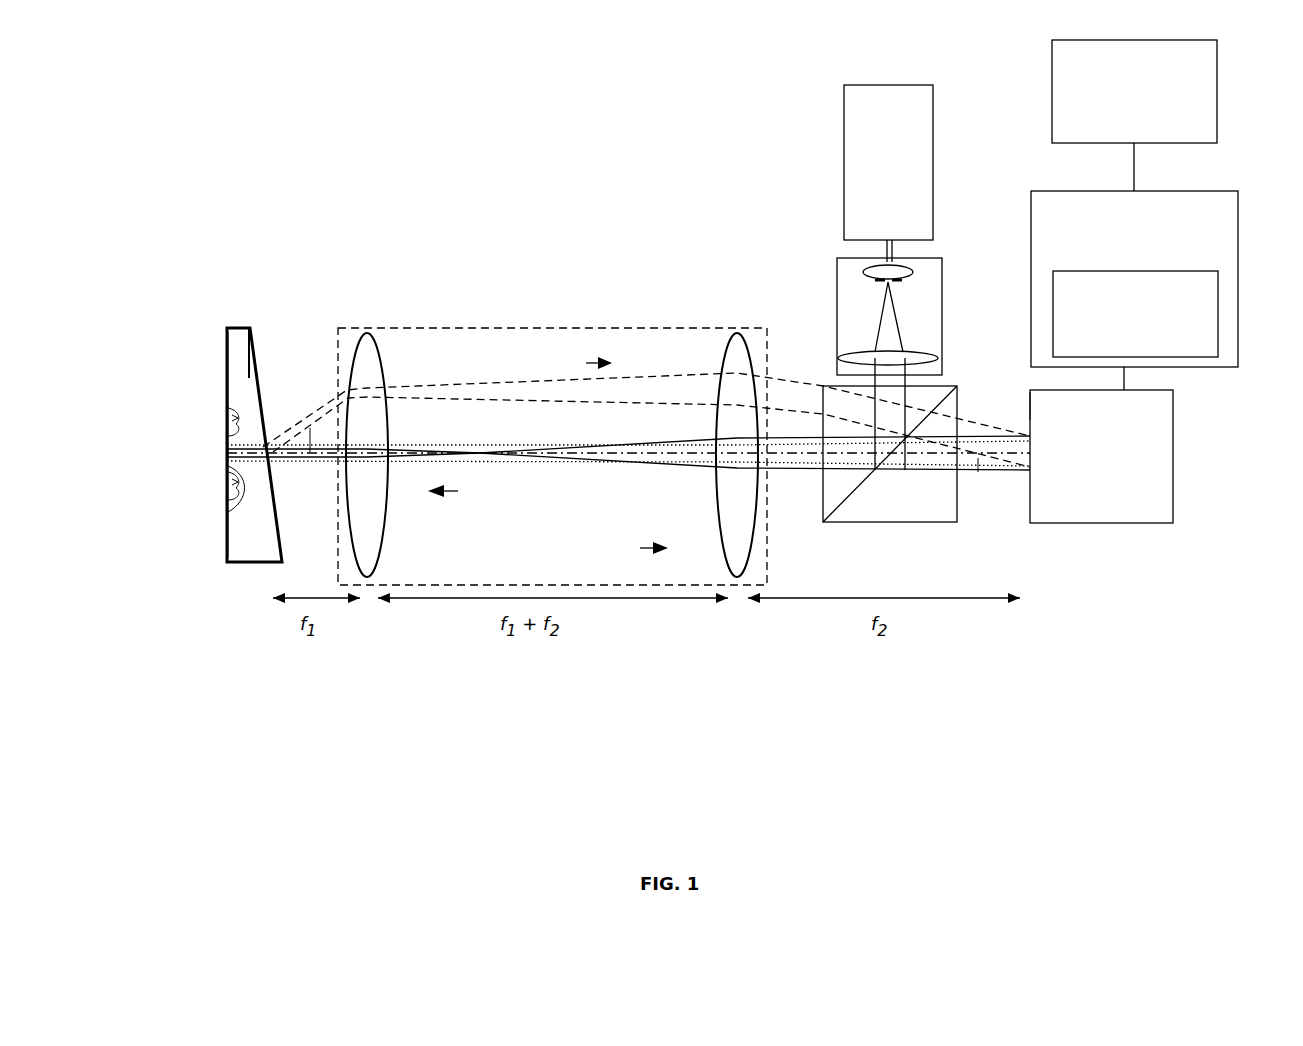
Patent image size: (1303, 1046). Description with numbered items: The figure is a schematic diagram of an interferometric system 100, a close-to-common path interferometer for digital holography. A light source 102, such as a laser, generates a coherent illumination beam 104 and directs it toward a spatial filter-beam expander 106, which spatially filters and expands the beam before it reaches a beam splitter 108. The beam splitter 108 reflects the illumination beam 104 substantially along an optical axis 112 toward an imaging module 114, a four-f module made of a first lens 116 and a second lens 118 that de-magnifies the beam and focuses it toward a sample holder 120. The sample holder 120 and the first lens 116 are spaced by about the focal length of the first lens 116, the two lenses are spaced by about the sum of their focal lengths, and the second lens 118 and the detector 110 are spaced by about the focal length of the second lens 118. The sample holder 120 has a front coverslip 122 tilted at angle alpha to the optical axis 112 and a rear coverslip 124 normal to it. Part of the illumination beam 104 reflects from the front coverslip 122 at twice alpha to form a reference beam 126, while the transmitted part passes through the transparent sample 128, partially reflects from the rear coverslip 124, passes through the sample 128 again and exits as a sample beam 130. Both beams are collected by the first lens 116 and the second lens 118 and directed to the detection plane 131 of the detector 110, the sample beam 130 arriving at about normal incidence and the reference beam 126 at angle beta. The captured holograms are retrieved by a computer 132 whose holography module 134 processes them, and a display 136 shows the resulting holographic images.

The interferometric system 100 is at (276, 128).
The light source 102 is at (888, 162).
The illumination beam 104 is at (338, 407).
The spatial filter-beam expander 106 is at (942, 338).
The beam splitter 108 is at (957, 522).
The detector 110 is at (1101, 456).
The optical axis 112 is at (670, 445).
The imaging module 114 is at (547, 328).
The lens L1 116 is at (358, 347).
The lens L2 118 is at (720, 364).
The sample holder 120 is at (226, 342).
The front coverslip 122 is at (252, 364).
The rear coverslip 124 is at (226, 402).
The reference beam 126 is at (658, 375).
The sample 128 is at (242, 500).
The sample beam 130 is at (700, 468).
The detection plane 131 is at (1030, 412).
The computer 132 is at (1134, 290).
The holography module 134 is at (1135, 314).
The display 136 is at (1134, 115).